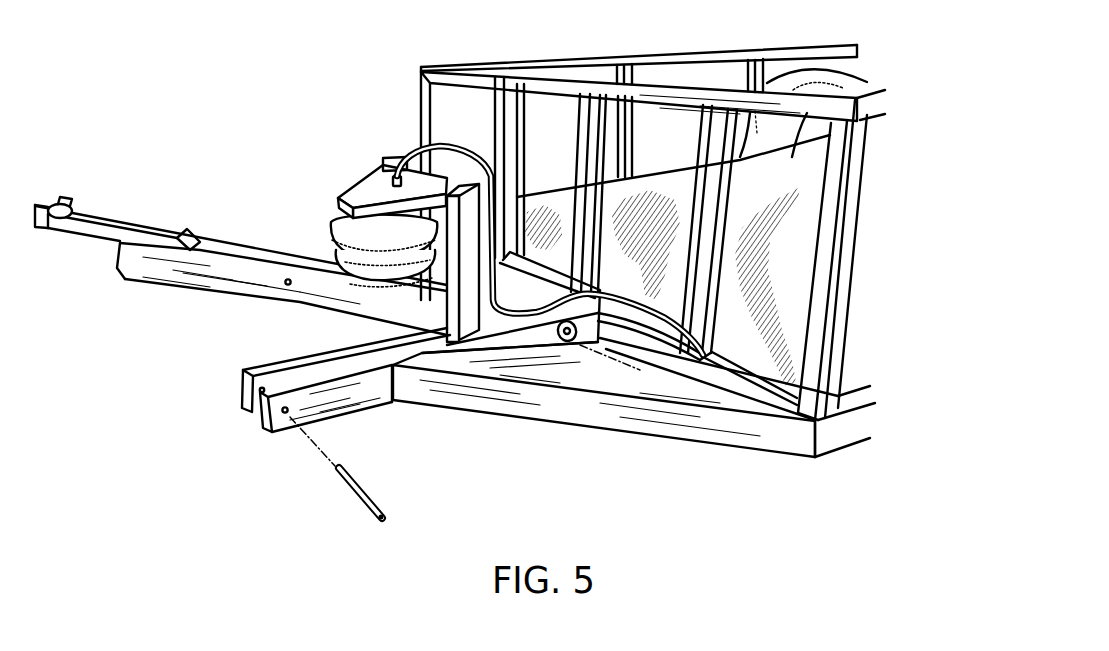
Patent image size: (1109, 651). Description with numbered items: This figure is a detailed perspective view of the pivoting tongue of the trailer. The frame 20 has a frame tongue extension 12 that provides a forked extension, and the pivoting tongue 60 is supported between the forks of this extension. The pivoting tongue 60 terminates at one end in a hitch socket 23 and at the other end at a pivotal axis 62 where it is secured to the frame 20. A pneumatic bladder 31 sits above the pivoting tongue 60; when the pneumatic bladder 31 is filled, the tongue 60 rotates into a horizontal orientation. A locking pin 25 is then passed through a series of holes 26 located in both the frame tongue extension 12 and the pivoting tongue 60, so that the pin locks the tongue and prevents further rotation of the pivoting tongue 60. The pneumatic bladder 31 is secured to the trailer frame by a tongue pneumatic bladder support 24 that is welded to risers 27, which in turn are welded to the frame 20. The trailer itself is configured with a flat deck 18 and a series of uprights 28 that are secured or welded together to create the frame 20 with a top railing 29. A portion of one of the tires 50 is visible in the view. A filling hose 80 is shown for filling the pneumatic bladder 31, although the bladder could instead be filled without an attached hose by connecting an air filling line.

The frame tongue extension 12 is at (633, 433).
The flat deck 18 is at (652, 200).
The frame 20 is at (587, 58).
The hitch socket 23 is at (62, 235).
The tongue pneumatic bladder support 24 is at (377, 180).
The locking pin 25 is at (353, 498).
The holes 26 is at (285, 284).
The risers 27 is at (395, 156).
The uprights 28 is at (847, 308).
The top railing 29 is at (648, 56).
The pneumatic bladder 31 is at (330, 222).
The tire 50 is at (800, 68).
The pivoting tongue 60 is at (143, 283).
The pivotal axis 62 is at (563, 340).
The filling hose 80 is at (420, 150).